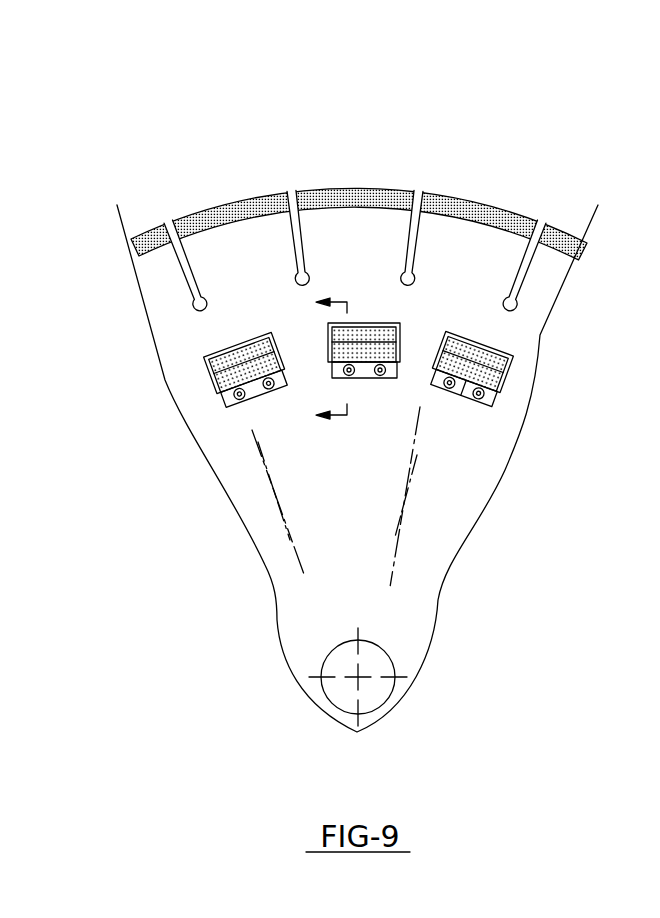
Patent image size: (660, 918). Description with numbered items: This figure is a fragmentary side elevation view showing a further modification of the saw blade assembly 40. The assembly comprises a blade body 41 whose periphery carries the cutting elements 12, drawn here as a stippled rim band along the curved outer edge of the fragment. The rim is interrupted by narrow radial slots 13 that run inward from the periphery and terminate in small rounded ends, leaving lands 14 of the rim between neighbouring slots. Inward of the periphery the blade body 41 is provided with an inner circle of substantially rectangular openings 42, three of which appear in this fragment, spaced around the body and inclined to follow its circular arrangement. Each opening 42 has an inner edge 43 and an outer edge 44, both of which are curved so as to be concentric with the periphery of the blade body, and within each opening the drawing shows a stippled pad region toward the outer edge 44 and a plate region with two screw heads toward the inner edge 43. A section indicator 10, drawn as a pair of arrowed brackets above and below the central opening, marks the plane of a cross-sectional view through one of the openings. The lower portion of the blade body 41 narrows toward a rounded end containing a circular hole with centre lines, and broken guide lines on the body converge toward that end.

The section line 10 is at (310, 359).
The cutting elements 12 is at (343, 192).
The slot 13 is at (290, 206).
The land between slots 14 is at (388, 209).
The saw blade assembly 40 is at (380, 468).
The blade body 41 is at (468, 502).
The rectangular openings 42 is at (405, 322).
The inner edge 43 is at (363, 362).
The outer edge 44 is at (378, 323).